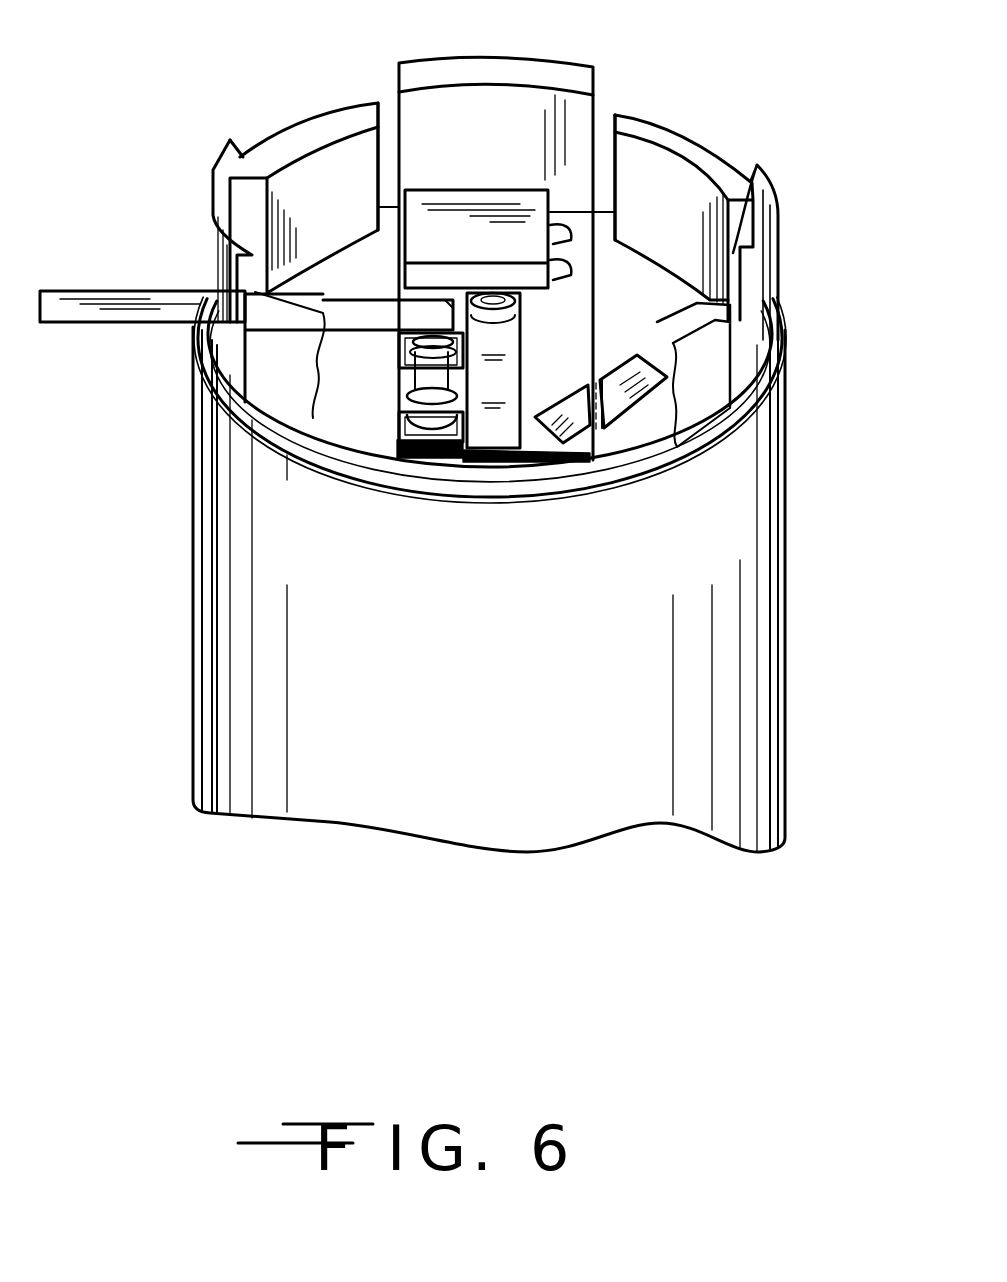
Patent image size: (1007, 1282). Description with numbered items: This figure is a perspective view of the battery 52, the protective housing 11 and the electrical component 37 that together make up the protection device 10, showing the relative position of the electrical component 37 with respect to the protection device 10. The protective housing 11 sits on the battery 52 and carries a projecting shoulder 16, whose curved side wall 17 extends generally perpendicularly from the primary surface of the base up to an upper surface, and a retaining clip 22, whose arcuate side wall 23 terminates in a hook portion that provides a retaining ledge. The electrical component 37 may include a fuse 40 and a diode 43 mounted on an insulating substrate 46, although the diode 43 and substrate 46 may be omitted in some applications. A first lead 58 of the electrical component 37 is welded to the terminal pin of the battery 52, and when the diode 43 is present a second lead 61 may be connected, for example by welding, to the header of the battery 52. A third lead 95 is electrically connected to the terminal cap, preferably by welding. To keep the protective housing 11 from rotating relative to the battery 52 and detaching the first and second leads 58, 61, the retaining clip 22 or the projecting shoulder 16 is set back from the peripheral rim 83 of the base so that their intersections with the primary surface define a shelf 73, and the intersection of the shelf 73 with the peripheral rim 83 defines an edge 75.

The protection device 10 is at (160, 428).
The protective housing 11 is at (797, 200).
The projecting shoulder 16 is at (340, 206).
The curved side wall 17 is at (352, 153).
The retaining clip 22 is at (493, 150).
The arcuate side wall 23 is at (535, 107).
The electrical component 37 is at (378, 405).
The fuse 40 is at (397, 383).
The diode 43 is at (468, 258).
The insulating substrate 46 is at (393, 270).
The battery 52 is at (475, 651).
The first lead 58 is at (503, 385).
The second lead 61 is at (610, 373).
The shelf 73 is at (787, 330).
The edge 75 is at (675, 462).
The peripheral rim 83 is at (592, 488).
The third lead 95 is at (143, 325).